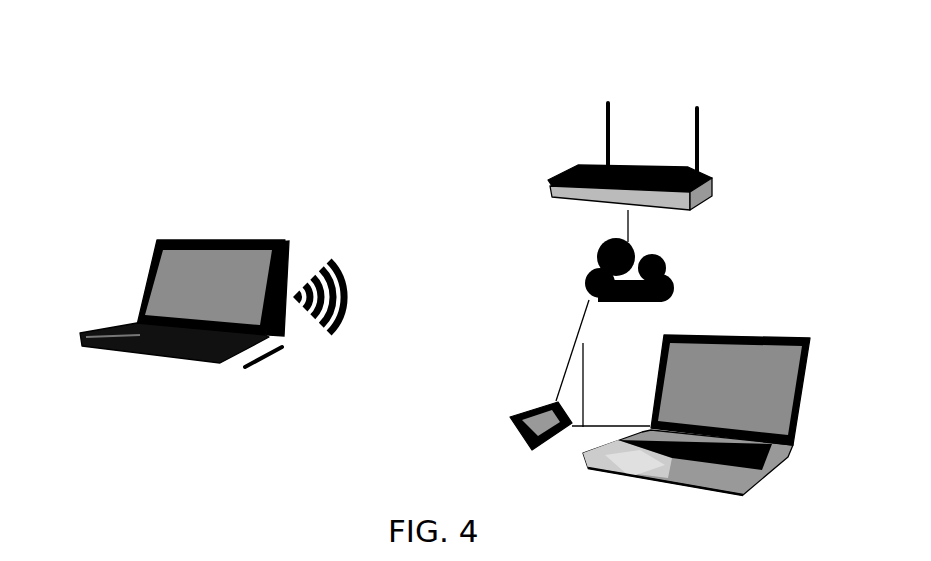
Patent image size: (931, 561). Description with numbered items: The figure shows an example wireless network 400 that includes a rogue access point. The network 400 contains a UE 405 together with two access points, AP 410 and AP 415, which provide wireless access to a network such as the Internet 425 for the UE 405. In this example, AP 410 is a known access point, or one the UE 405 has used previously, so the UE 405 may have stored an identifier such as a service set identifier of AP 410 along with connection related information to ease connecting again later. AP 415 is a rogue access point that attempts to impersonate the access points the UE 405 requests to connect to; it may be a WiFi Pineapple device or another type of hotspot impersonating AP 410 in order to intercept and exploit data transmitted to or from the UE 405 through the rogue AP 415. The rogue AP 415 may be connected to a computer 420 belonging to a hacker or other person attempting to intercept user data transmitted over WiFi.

The wireless network 400 is at (99, 119).
The UE 405 is at (267, 242).
The AP 410 is at (550, 178).
The rogue AP 415 is at (535, 405).
The computer 420 is at (737, 337).
The Internet 425 is at (672, 266).